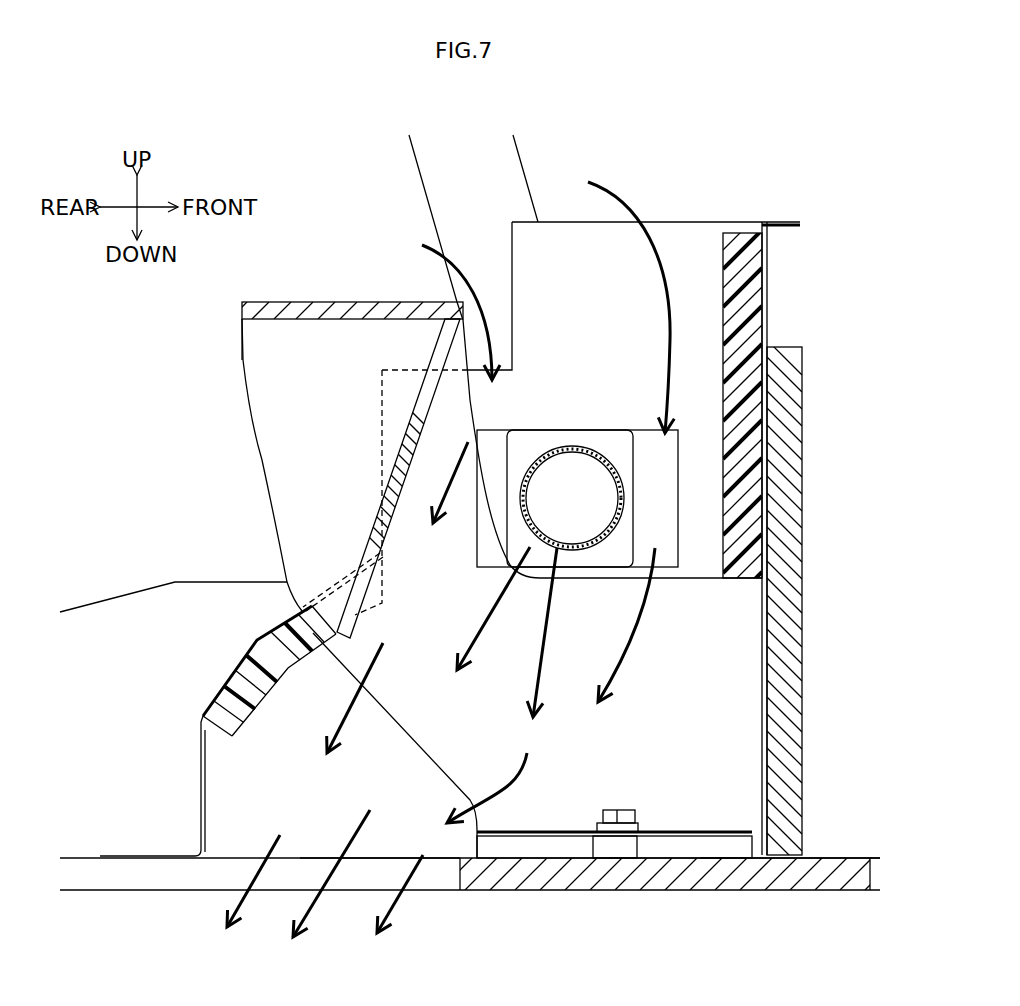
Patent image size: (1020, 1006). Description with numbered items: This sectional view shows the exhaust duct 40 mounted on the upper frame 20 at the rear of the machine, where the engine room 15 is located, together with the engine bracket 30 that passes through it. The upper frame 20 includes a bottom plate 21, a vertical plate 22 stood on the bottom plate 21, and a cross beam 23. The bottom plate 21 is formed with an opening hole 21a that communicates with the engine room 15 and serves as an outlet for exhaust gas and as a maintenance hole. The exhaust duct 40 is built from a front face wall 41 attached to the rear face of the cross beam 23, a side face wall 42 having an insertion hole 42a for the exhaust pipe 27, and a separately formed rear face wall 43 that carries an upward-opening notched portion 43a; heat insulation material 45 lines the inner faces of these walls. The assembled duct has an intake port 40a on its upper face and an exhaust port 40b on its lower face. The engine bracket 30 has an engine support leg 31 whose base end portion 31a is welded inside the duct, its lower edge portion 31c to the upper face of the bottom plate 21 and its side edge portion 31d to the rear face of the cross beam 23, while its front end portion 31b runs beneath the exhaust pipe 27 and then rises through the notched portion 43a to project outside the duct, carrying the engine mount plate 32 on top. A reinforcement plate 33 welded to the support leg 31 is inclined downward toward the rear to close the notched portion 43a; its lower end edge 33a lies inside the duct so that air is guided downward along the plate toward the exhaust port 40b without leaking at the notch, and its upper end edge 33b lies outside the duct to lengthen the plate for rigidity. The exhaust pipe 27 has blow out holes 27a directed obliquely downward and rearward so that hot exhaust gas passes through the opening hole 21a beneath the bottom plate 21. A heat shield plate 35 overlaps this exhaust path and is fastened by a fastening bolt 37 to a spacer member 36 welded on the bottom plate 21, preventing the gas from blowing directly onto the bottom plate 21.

The engine room 15 is at (145, 462).
The upper frame 20 is at (853, 218).
The bottom plate 21 is at (620, 883).
The opening hole 21a is at (437, 870).
The vertical plate 22 is at (190, 580).
The cross beam 23 is at (800, 522).
The exhaust pipe 27 is at (572, 446).
The blow out hole 27a is at (537, 538).
The engine bracket 30 is at (242, 365).
The engine support leg 31 is at (262, 452).
The base end portion 31a is at (738, 838).
The front end portion 31b is at (267, 337).
The lower edge portion 31c is at (550, 860).
The side edge portion 31d is at (762, 700).
The engine mount plate 32 is at (307, 302).
The reinforcement plate 33 is at (393, 437).
The lower end edge 33a is at (337, 637).
The upper end edge 33b is at (450, 307).
The heat shield plate 35 is at (675, 822).
The spacer member 36 is at (637, 848).
The fastening bolt 37 is at (616, 808).
The exhaust duct 40 is at (257, 636).
The intake port 40a is at (413, 372).
The exhaust port 40b is at (247, 837).
The front face wall 41 is at (767, 258).
The side face wall 42 is at (690, 222).
The insertion hole 42a is at (660, 450).
The rear face wall 43 is at (200, 762).
The notched portion 43a is at (320, 600).
The heat insulation material 45 is at (752, 298).